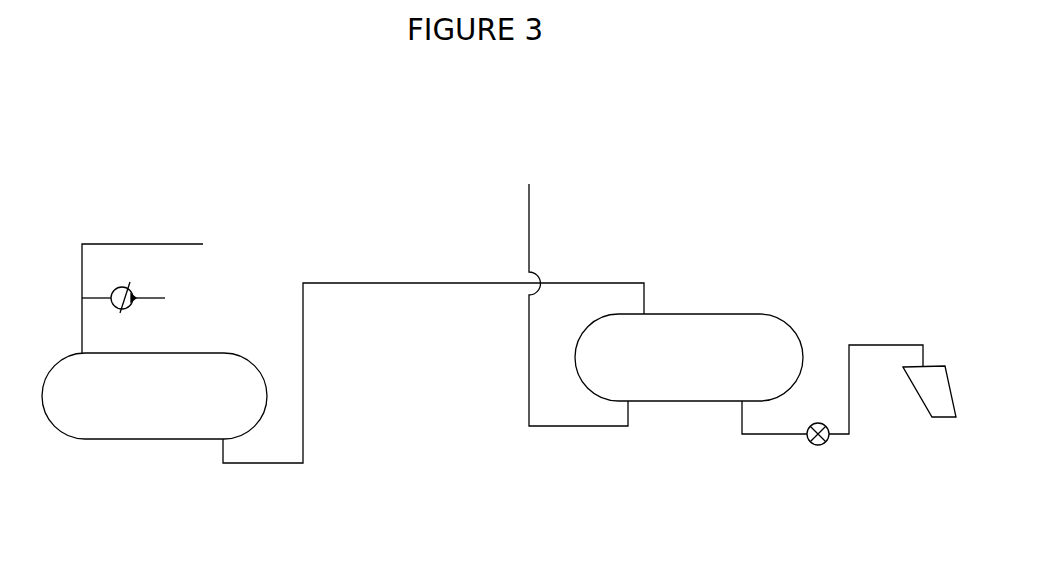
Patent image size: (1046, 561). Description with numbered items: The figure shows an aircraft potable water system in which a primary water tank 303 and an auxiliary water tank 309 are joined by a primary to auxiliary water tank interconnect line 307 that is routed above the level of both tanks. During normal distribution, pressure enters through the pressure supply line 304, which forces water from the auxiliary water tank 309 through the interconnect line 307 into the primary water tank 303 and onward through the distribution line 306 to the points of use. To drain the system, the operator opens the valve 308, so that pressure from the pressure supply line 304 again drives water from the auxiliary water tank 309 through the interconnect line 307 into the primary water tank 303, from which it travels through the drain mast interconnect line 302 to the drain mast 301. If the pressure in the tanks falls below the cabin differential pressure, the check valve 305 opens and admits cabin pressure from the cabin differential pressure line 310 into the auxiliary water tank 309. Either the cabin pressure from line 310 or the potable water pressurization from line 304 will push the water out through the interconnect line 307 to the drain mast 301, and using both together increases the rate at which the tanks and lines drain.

The drain mast 301 is at (945, 418).
The drain mast interconnect line 302 is at (887, 343).
The primary water tank 303 is at (695, 402).
The pressure supply line 304 is at (143, 243).
The check valve 305 is at (132, 288).
The distribution line 306 is at (528, 233).
The primary to auxiliary water tank interconnect line 307 is at (265, 464).
The valve 308 is at (823, 442).
The auxiliary water tank 309 is at (152, 442).
The cabin differential pressure line 310 is at (168, 301).